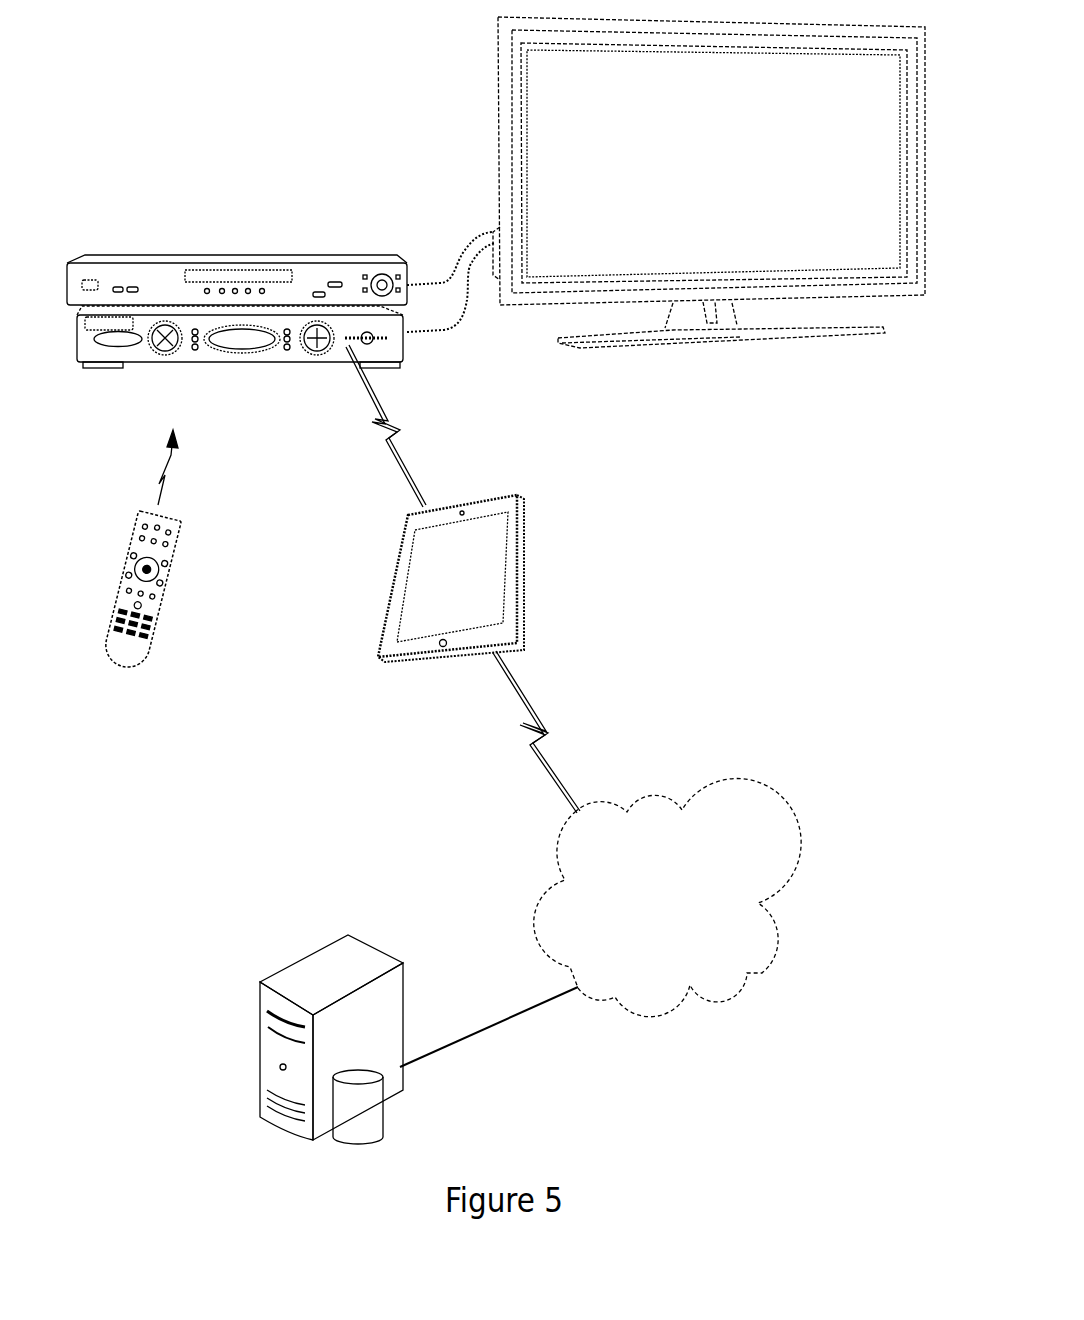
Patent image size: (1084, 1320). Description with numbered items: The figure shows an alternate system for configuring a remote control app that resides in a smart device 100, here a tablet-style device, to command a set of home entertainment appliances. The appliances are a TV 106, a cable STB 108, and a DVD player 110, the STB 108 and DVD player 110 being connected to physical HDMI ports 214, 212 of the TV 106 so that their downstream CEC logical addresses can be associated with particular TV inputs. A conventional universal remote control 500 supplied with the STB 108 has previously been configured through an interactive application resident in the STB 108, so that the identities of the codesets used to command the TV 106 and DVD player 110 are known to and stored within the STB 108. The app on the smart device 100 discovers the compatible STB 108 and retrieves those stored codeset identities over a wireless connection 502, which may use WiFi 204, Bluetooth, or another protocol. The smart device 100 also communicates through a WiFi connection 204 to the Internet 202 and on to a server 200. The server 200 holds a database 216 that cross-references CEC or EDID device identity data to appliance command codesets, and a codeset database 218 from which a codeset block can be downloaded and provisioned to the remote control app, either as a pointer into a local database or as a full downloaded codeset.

The TV set 106 is at (498, 95).
The DVD player 110 is at (307, 262).
The cable STB 108 is at (278, 362).
The HDMI port 214 is at (497, 228).
The HDMI port 212 is at (498, 245).
The wireless connection 502 is at (363, 390).
The WiFi connection 204 is at (532, 745).
The smart device 100 is at (512, 652).
The universal remote control 500 is at (152, 637).
The Internet 202 is at (727, 762).
The server 200 is at (402, 1033).
The database 216 is at (425, 1107).
The codeset database 218 is at (388, 1118).